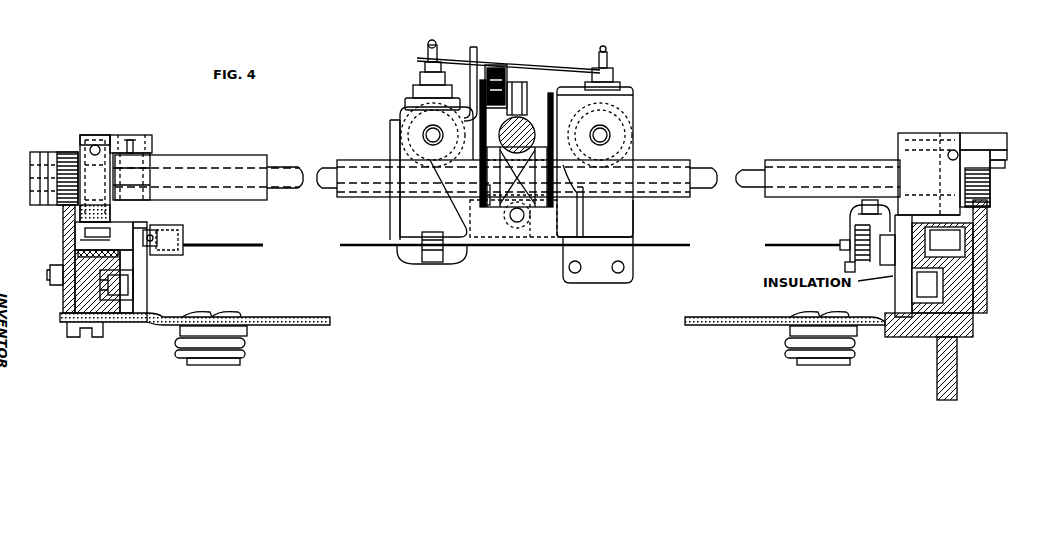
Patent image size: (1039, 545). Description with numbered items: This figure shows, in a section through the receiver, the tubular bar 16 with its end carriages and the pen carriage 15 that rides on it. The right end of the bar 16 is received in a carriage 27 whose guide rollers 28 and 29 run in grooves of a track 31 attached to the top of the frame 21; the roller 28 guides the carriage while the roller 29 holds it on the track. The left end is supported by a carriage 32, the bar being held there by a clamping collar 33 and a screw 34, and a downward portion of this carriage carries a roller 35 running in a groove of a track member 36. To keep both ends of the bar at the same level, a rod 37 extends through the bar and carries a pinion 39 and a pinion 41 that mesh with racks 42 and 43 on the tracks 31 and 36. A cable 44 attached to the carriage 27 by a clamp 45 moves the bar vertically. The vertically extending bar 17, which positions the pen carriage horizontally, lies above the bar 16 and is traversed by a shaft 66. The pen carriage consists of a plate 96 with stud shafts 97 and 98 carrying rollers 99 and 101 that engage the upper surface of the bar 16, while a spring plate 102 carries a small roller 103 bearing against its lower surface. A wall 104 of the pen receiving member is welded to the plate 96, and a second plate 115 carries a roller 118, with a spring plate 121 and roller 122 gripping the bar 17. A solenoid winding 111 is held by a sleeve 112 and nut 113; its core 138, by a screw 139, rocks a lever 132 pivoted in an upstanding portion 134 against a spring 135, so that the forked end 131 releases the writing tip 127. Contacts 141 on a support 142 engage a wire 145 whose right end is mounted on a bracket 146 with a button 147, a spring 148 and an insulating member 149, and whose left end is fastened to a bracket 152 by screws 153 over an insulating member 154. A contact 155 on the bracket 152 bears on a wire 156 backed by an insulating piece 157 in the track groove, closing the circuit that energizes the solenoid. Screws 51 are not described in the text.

The pen carriage 15 is at (513, 159).
The bar 16 is at (803, 160).
The vertically extending bar 17 is at (505, 128).
The frame 21 is at (937, 375).
The carriage 27 is at (918, 133).
The guide roller 28 is at (987, 237).
The guide roller 29 is at (920, 283).
The track 31 is at (990, 255).
The carriage 32 is at (100, 135).
The clamping collar 33 is at (130, 135).
The screw 34 is at (148, 150).
The roller 35 is at (125, 283).
The track member 36 is at (70, 300).
The rod 37 is at (325, 168).
The pinion 39 is at (992, 180).
The pinion 41 is at (68, 152).
The rack 42 is at (987, 215).
The rack 43 is at (63, 225).
The cable 44 is at (1005, 155).
The clamp 45 is at (1005, 165).
The screw 51 is at (878, 211).
The shaft 66 is at (527, 124).
The plate 96 is at (633, 215).
The stud shaft 97 is at (612, 137).
The stud shaft 98 is at (425, 131).
The roller 99 is at (633, 117).
The roller 101 is at (400, 136).
The spring plate 102 is at (493, 232).
The small roller 103 is at (527, 232).
The wall 104 is at (625, 95).
The solenoid winding 111 is at (392, 212).
The sleeve 112 is at (415, 90).
The nut 113 is at (407, 102).
The second plate 115 is at (550, 108).
The roller 118 is at (540, 173).
The spring plate 121 is at (487, 197).
The roller 122 is at (527, 95).
The writing tip 127 is at (607, 52).
The forked end 131 is at (612, 72).
The lever 132 is at (545, 62).
The upstanding portion 134 is at (472, 50).
The spring 135 is at (495, 65).
The solenoid core 138 is at (422, 78).
The screw 139 is at (430, 50).
The contacts 141 is at (430, 245).
The support 142 is at (432, 265).
The wire 145 is at (650, 247).
The bracket 146 is at (845, 218).
The button 147 is at (853, 235).
The spring 148 is at (846, 267).
The insulating member 149 is at (892, 262).
The bracket 152 is at (183, 240).
The screws 153 is at (160, 232).
The insulating member 154 is at (147, 260).
The contact 155 is at (80, 241).
The wire 156 is at (78, 253).
The insulating piece 157 is at (63, 268).